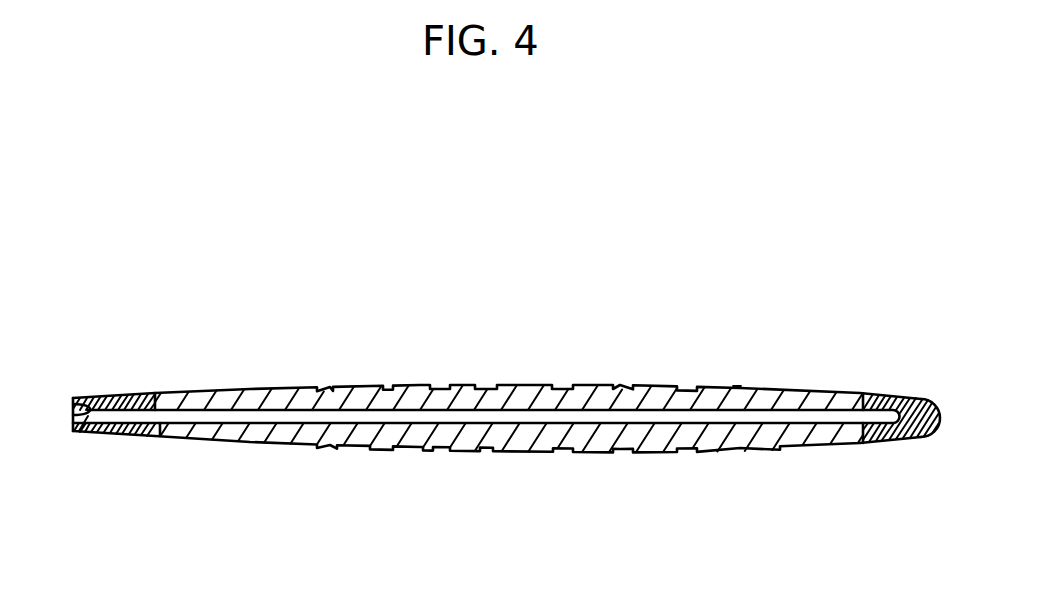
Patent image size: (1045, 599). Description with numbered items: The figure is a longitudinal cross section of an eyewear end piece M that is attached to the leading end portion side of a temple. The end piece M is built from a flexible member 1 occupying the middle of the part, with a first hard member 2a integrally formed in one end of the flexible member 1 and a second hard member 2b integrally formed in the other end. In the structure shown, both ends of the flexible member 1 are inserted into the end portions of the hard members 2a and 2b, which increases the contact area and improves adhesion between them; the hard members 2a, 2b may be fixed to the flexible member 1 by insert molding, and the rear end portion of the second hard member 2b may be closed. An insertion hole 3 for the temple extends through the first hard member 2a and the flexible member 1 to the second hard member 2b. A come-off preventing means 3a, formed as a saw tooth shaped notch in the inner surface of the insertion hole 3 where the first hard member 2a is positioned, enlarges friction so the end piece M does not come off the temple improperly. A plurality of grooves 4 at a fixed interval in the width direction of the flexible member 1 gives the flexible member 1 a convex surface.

The flexible member 1 is at (528, 388).
The first hard member 2a is at (127, 393).
The second hard member 2b is at (905, 398).
The insertion hole 3 is at (530, 414).
The come-off preventing means 3a is at (73, 407).
The grooves 4 is at (382, 387).
The end piece M is at (737, 385).